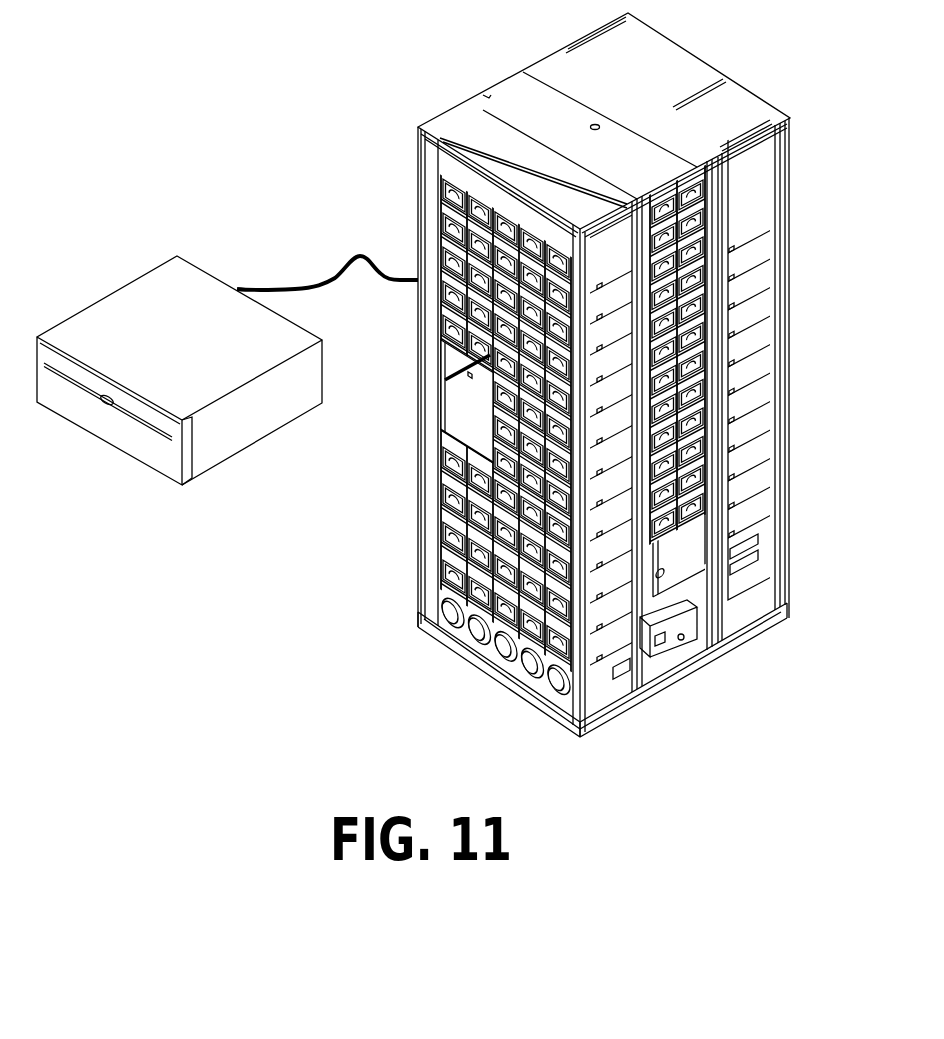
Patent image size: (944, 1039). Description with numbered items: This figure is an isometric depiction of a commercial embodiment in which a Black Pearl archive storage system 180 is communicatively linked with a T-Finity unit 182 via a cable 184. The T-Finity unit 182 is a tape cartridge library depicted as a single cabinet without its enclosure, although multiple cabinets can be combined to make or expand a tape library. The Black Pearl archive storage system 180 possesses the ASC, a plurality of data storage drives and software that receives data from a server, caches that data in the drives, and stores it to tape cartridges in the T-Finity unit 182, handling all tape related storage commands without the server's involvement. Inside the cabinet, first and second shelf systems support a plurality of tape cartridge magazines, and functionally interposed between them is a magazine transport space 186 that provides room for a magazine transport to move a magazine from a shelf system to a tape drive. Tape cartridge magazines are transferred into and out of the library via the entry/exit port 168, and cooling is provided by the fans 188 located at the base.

The Black Pearl archive storage system 180 is at (157, 268).
The T-Finity unit 182 is at (445, 73).
The cable 184 is at (322, 273).
The entry/exit port 168 is at (452, 400).
The magazine transport space 186 is at (695, 634).
The fans 188 is at (445, 654).